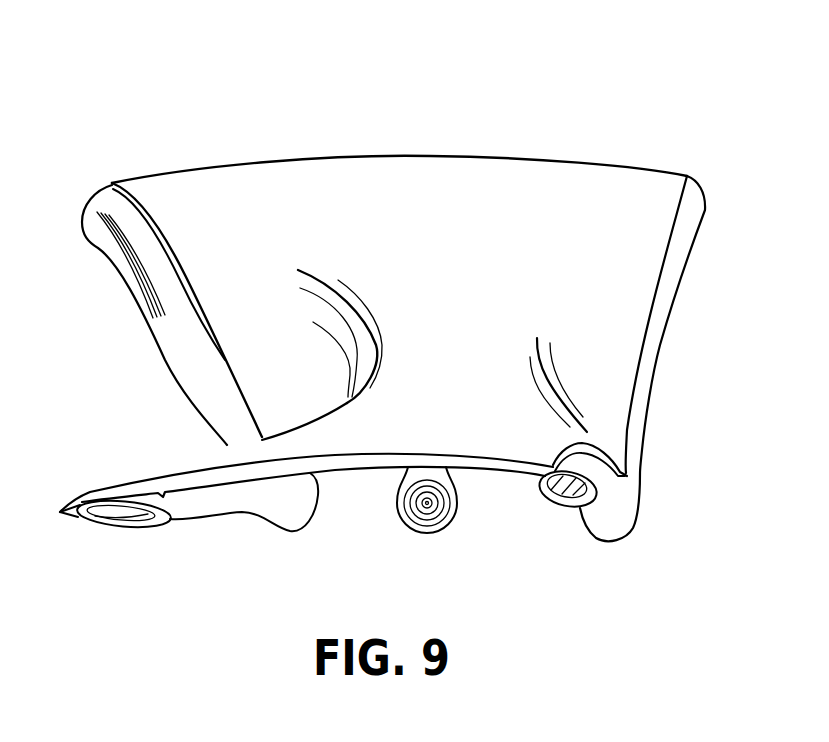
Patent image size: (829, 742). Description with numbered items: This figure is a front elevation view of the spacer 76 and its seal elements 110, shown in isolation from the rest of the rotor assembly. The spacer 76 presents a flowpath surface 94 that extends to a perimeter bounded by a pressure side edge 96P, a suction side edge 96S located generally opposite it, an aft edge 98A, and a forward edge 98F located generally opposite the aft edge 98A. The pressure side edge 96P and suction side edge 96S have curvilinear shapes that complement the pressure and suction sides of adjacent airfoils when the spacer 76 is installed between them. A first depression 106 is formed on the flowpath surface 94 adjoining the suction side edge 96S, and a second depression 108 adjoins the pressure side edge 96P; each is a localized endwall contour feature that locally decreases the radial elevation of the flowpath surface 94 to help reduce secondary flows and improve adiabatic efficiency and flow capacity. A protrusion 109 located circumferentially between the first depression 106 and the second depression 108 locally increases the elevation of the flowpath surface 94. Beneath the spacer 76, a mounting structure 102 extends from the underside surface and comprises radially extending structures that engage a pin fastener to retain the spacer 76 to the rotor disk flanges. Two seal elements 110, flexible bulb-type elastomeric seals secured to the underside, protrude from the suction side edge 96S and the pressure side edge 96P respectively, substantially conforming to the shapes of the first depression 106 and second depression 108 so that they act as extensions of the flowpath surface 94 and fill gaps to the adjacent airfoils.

The spacer 76 is at (403, 110).
The flowpath surface 94 is at (514, 198).
The aft edge 98A is at (213, 167).
The forward edge 98F is at (345, 468).
The suction side edge 96S is at (163, 230).
The pressure side edge 96P is at (658, 276).
The mounting structure 102 is at (458, 502).
The first depression 106 is at (302, 311).
The second depression 108 is at (622, 340).
The protrusion 109 is at (460, 315).
The seal elements 110 is at (145, 526).